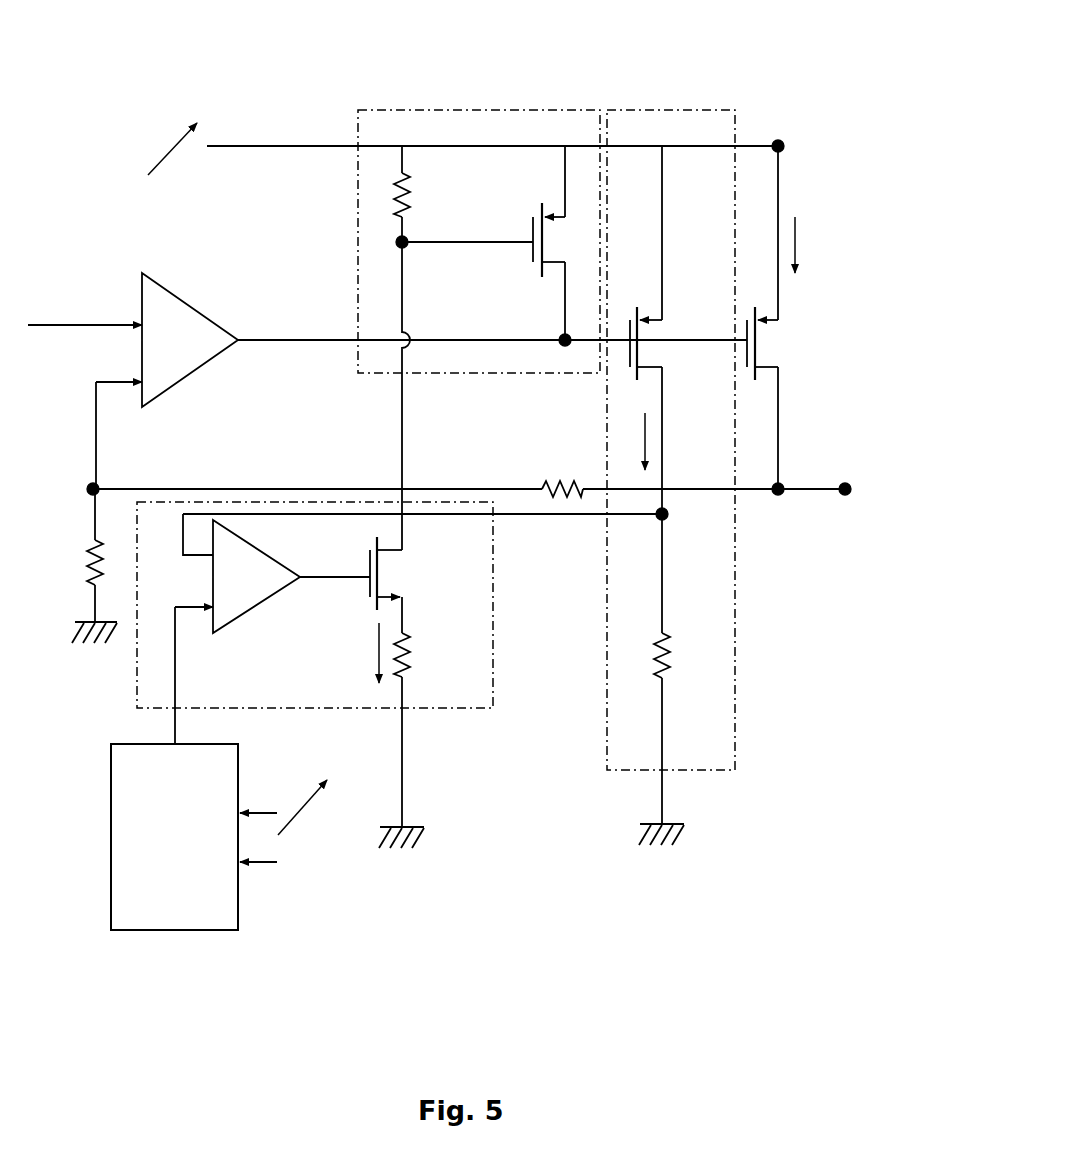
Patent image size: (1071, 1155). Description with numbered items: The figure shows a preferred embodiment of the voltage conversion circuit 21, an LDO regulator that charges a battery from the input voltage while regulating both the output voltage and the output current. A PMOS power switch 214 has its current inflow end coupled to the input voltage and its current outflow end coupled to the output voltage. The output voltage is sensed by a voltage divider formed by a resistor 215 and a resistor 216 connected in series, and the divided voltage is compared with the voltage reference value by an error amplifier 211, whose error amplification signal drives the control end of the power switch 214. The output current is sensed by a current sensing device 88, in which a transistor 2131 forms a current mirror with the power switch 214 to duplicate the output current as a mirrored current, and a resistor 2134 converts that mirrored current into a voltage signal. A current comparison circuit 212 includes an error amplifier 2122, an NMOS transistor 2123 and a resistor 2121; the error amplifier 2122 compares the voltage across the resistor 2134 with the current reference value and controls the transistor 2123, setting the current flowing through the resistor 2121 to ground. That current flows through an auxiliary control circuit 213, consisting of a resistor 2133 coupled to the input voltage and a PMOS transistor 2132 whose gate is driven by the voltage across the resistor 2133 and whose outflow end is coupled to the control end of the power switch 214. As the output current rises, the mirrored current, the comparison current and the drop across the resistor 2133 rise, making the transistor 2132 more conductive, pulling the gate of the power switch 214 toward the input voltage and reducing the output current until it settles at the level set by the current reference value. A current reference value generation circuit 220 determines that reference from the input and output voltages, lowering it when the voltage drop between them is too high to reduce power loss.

The voltage conversion circuit 21 is at (820, 62).
The current sensing device 88 is at (727, 110).
The error amplifier 211 is at (175, 292).
The current comparison circuit 212 is at (490, 710).
The auxiliary control circuit 213 is at (557, 110).
The power switch 214 is at (773, 343).
The resistor 215 is at (562, 476).
The resistor 216 is at (79, 566).
The current reference value generation circuit 220 is at (219, 837).
The resistor 2121 is at (396, 735).
The error amplifier 2122 is at (276, 592).
The transistor 2123 is at (397, 585).
The transistor 2131 is at (661, 350).
The transistor 2132 is at (560, 243).
The resistor 2133 is at (463, 348).
The resistor 2134 is at (680, 739).